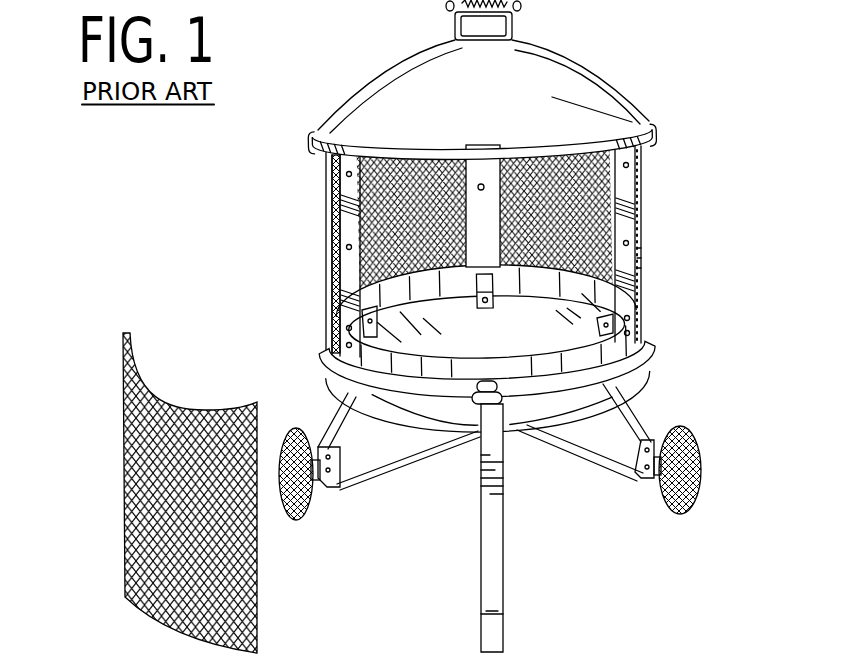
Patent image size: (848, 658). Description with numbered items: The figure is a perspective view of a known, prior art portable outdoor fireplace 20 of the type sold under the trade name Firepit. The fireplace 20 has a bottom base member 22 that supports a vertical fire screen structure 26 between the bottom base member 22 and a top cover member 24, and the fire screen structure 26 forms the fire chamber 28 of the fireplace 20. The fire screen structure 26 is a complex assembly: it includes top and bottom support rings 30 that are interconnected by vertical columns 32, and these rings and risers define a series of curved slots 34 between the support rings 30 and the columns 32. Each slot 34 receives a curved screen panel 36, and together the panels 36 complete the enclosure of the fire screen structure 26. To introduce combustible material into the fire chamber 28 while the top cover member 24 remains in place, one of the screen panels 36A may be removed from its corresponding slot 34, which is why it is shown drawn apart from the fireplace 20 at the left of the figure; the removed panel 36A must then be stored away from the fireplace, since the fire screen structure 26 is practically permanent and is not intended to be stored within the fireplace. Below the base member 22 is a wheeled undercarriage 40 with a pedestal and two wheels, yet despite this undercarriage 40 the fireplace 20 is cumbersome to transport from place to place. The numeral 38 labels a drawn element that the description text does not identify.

The portable outdoor fireplace 20 is at (597, 58).
The bottom base member 22 is at (647, 363).
The top cover member 24 is at (603, 100).
The fire screen structure 26 is at (636, 304).
The fire chamber 28 is at (622, 266).
The support rings 30 is at (334, 183).
The vertical columns 32 is at (482, 173).
The curved slots 34 is at (620, 223).
The curved screen panels 36 is at (620, 192).
The removable screen panel 36A is at (140, 483).
The fire bowl 38 is at (512, 321).
The wheeled undercarriage 40 is at (586, 470).